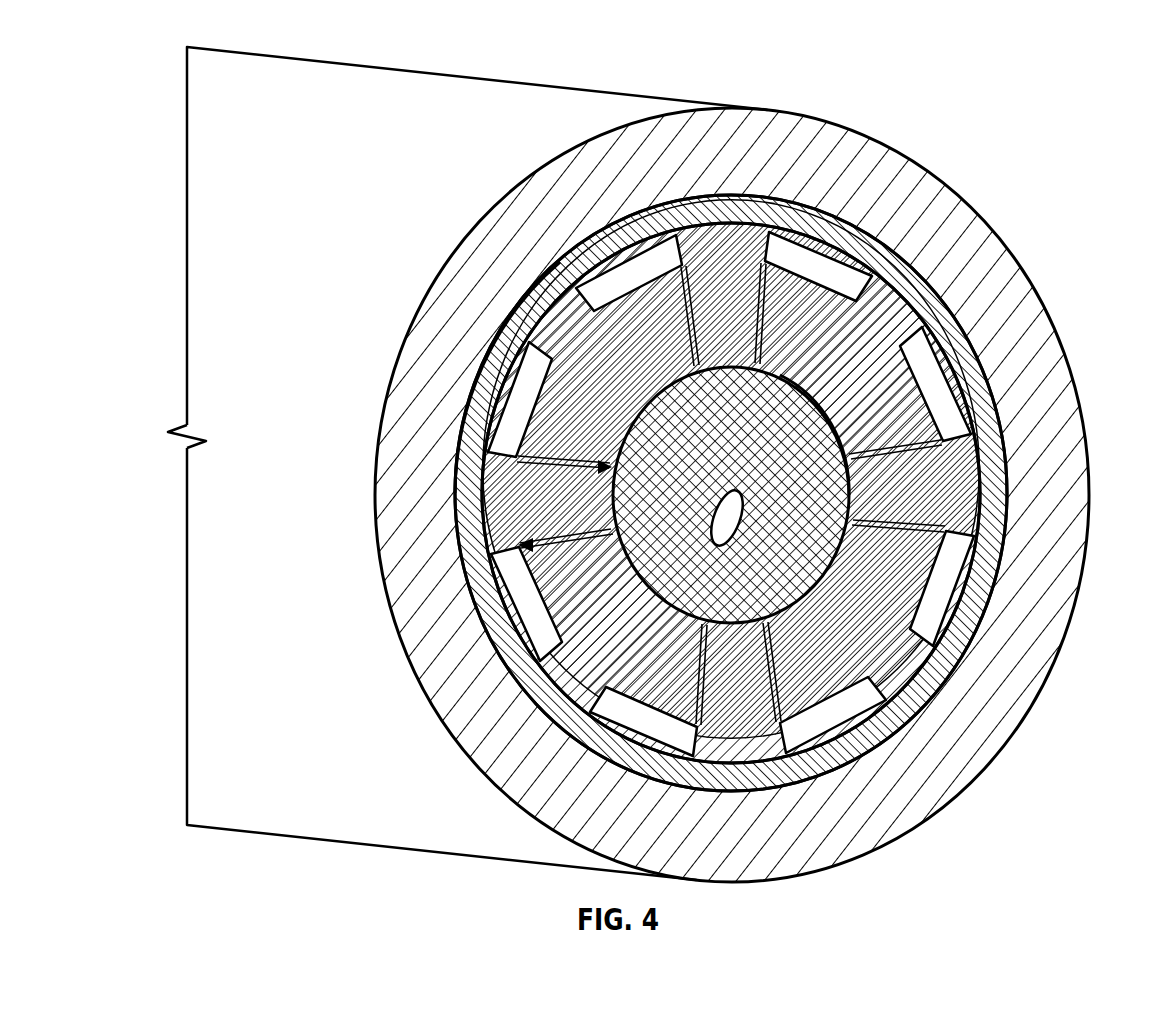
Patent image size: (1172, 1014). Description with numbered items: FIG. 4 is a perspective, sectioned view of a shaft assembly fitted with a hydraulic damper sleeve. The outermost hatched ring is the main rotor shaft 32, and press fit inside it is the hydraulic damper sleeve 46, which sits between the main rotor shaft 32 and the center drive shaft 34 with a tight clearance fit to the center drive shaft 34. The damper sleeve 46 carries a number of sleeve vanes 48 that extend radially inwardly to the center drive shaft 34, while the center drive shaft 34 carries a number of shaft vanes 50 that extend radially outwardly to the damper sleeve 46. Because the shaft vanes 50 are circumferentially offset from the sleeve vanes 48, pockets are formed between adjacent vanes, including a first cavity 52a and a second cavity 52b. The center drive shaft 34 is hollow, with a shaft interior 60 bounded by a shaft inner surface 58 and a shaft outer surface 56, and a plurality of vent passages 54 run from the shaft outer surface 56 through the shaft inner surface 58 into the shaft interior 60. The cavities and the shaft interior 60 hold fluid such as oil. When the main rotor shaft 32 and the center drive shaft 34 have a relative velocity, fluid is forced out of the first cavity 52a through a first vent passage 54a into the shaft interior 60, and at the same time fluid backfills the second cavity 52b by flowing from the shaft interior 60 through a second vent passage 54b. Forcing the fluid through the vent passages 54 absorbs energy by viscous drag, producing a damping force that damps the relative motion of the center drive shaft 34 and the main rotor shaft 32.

The main rotor shaft 32 is at (458, 112).
The center drive shaft 34 is at (600, 660).
The hydraulic damper sleeve 46 is at (793, 223).
The sleeve vanes 48 is at (877, 303).
The shaft vanes 50 is at (727, 237).
The first cavity 52a is at (515, 415).
The second cavity 52b is at (520, 605).
The vent passages 54 is at (777, 320).
The first vent passage 54a is at (568, 460).
The second vent passage 54b is at (545, 560).
The shaft outer surface 56 is at (543, 273).
The shaft inner surface 58 is at (813, 405).
The shaft interior 60 is at (750, 436).